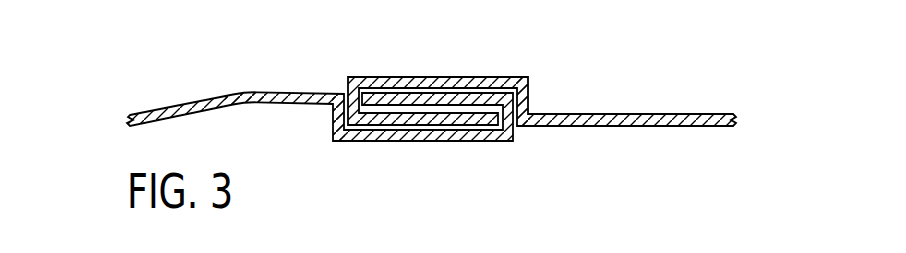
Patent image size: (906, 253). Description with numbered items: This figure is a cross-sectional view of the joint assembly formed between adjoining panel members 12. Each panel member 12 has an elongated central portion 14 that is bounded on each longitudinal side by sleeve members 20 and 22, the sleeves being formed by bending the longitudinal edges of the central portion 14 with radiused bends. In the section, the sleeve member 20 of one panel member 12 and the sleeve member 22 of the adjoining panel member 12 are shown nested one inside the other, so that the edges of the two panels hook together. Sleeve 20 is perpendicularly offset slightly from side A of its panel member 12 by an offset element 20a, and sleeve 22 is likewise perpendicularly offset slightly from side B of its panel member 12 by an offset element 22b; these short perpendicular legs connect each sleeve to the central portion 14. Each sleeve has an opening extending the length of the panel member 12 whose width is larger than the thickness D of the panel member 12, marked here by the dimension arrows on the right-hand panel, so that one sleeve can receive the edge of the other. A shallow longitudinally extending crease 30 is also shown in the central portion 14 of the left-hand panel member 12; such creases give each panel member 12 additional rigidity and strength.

The panel member 12 is at (189, 115).
The central portion 14 is at (207, 99).
The sleeve member 20 is at (373, 77).
The offset element 20a is at (530, 97).
The sleeve member 22 is at (503, 142).
The offset element 22b is at (333, 124).
The crease 30 is at (249, 103).
The side A is at (261, 92).
The side B is at (308, 105).
The thickness D is at (585, 192).